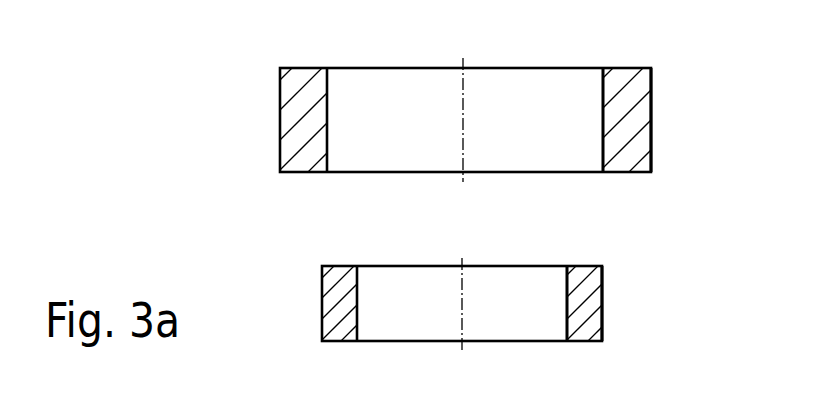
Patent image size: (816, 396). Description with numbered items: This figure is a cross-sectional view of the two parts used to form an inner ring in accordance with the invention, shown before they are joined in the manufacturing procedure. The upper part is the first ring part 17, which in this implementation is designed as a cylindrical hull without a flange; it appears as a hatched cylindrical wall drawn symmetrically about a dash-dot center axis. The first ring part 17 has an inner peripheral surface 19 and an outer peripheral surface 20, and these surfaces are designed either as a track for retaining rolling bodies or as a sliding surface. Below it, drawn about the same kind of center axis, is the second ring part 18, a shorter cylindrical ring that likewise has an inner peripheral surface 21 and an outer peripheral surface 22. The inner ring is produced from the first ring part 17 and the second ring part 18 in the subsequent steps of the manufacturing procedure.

The first ring part 17 is at (634, 92).
The second ring part 18 is at (603, 278).
The inner peripheral surface 19 is at (548, 89).
The outer peripheral surface 20 is at (695, 89).
The inner peripheral surface 21 is at (520, 276).
The outer peripheral surface 22 is at (677, 277).